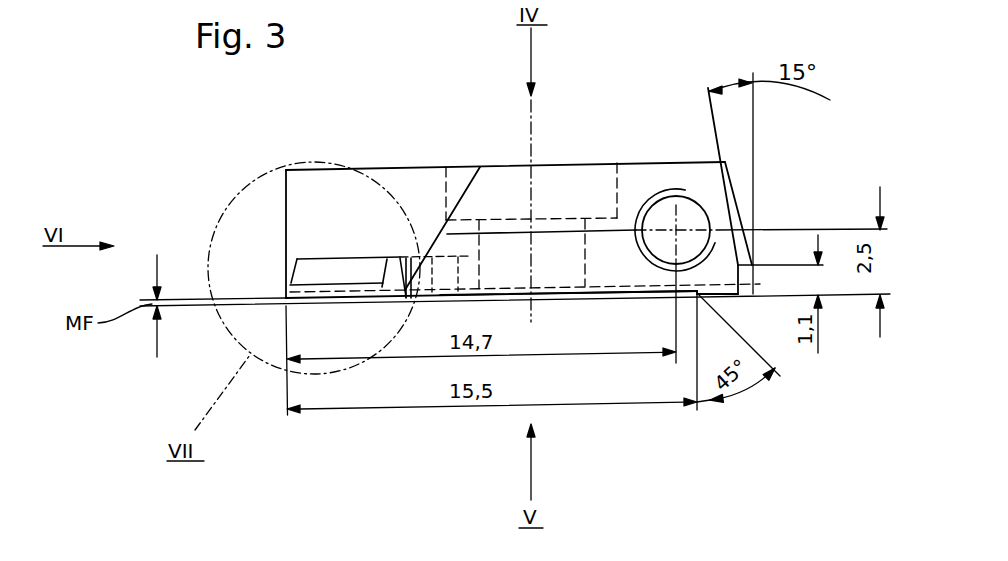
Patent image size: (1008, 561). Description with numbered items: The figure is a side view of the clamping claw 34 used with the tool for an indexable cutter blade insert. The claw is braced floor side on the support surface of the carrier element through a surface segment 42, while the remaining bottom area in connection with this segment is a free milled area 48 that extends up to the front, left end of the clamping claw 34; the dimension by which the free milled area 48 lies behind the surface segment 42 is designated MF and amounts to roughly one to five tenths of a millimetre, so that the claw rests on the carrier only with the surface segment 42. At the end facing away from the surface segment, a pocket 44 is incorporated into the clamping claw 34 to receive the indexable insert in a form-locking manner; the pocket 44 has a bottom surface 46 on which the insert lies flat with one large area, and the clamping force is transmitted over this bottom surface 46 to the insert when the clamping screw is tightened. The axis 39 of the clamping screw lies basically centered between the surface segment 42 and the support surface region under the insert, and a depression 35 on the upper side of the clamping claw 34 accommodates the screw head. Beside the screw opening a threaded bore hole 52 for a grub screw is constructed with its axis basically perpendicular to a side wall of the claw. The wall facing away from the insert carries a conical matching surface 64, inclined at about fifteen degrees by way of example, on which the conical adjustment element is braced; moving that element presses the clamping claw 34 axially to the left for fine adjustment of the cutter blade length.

The clamping claw 34 is at (658, 178).
The depression 35 is at (615, 187).
The axis of the clamping screw 39 is at (528, 132).
The surface segment 42 is at (728, 297).
The pocket 44 is at (351, 290).
The bottom surface 46 is at (333, 262).
The free milled area 48 is at (620, 295).
The threaded bore hole 52 is at (697, 217).
The matching surface 64 is at (723, 178).